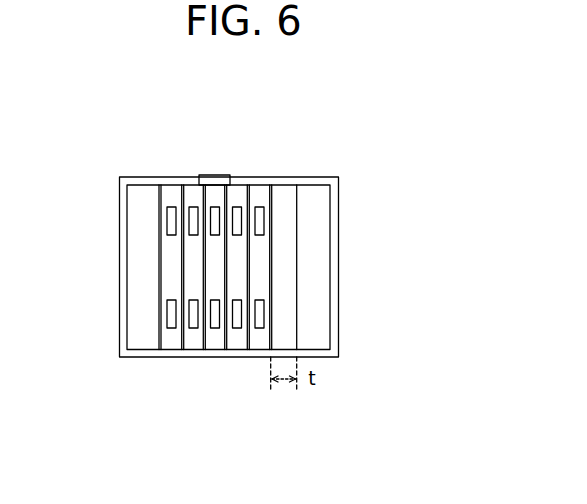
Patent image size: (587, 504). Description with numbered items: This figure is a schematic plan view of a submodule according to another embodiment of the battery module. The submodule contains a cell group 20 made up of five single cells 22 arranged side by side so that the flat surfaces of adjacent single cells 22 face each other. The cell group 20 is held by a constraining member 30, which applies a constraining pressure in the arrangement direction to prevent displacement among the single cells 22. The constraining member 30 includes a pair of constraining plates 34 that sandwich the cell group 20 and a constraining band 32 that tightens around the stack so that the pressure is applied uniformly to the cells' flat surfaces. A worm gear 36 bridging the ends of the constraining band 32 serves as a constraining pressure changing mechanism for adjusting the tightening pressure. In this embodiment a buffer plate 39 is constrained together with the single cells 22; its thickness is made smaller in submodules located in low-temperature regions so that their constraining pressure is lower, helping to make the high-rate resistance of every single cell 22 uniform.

The cell group 20 is at (98, 428).
The single cell 22 is at (168, 350).
The constraining member 30 is at (135, 110).
The constraining band 32 is at (168, 187).
The constraining plate 34 is at (140, 188).
The worm gear 36 is at (212, 176).
The buffer plate 39 is at (282, 248).